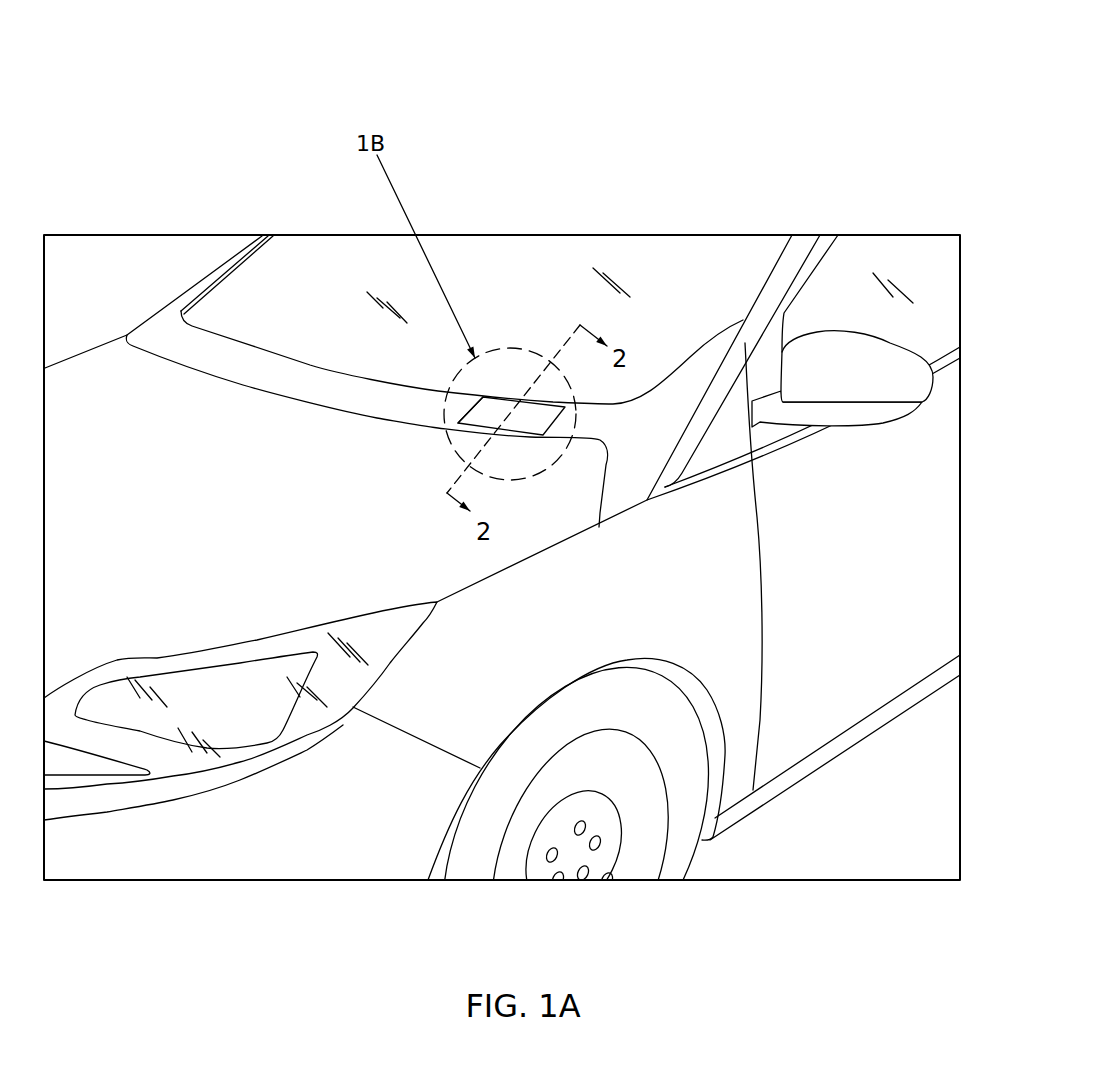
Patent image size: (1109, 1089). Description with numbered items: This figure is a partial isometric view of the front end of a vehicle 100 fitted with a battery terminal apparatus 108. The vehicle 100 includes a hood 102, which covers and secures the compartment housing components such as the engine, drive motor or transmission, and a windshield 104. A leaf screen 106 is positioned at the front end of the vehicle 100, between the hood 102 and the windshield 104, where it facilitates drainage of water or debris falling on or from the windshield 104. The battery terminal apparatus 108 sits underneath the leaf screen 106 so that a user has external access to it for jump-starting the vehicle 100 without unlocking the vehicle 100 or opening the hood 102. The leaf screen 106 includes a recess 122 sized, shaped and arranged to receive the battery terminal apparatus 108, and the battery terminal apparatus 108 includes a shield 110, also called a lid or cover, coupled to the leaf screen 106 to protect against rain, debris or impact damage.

The vehicle 100 is at (772, 107).
The hood 102 is at (100, 368).
The windshield 104 is at (307, 260).
The leaf screen 106 is at (198, 347).
The battery terminal apparatus 108 is at (500, 407).
The shield 110 is at (568, 388).
The recess 122 is at (458, 410).